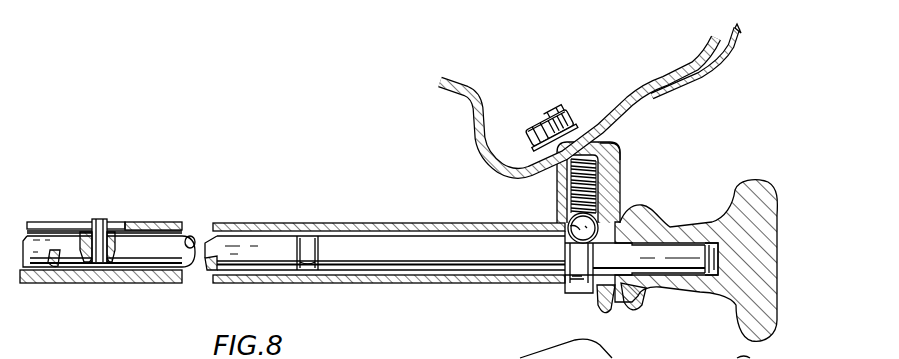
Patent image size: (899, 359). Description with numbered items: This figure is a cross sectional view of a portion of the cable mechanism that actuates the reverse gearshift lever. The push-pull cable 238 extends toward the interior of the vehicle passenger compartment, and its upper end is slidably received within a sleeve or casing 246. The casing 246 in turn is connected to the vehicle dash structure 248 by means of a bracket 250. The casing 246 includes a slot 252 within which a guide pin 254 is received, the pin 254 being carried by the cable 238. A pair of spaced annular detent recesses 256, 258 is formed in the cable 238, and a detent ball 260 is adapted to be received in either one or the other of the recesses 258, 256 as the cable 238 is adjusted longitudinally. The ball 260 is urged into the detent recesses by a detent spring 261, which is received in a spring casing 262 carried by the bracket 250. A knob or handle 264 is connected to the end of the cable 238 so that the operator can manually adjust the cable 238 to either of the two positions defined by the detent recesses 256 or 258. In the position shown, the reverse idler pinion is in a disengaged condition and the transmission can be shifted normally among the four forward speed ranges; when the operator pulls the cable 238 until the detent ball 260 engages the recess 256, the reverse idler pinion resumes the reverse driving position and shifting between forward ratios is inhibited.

The push-pull cable 238 is at (265, 245).
The sleeve or casing 246 is at (373, 227).
The vehicle dash structure 248 is at (612, 112).
The bracket 250 is at (610, 170).
The slot 252 is at (120, 210).
The guide pin 254 is at (46, 222).
The annular detent recess 256 is at (313, 247).
The annular detent recess 258 is at (574, 287).
The detent ball 260 is at (568, 228).
The detent spring 261 is at (616, 151).
The spring casing 262 is at (600, 188).
The knob or handle 264 is at (701, 295).